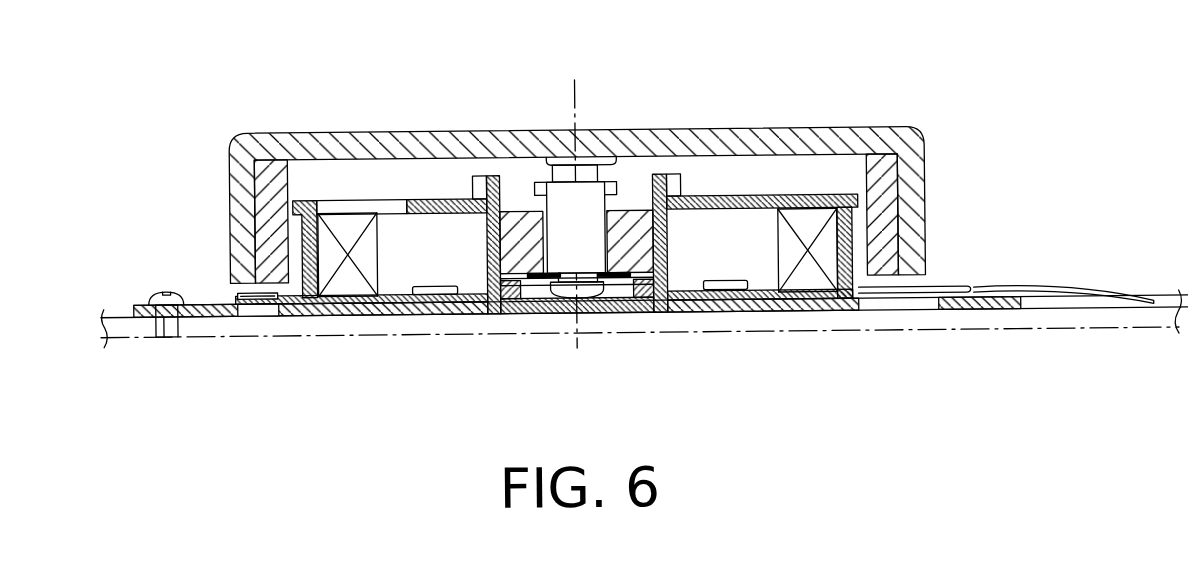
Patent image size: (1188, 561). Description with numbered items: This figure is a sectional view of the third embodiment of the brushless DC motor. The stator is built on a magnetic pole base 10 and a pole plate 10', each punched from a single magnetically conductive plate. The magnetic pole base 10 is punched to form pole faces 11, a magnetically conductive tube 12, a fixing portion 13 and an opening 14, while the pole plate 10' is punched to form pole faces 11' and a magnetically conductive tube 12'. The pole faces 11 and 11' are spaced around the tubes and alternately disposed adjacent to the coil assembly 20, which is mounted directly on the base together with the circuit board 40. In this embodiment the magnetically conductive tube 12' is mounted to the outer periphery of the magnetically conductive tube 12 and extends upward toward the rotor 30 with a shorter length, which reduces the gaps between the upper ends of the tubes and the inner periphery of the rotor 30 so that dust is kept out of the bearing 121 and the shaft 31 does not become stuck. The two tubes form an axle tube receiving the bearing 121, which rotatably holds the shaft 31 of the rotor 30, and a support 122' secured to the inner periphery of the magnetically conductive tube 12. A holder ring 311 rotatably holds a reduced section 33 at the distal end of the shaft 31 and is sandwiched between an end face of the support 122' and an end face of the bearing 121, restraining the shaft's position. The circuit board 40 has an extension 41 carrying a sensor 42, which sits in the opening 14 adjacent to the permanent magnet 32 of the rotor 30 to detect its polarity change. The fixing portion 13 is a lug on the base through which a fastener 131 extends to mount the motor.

The magnetic pole base 10 is at (644, 348).
The pole plate 10' is at (586, 131).
The pole faces 11 is at (904, 306).
The pole faces 11' is at (305, 174).
The magnetically conductive tube 12 is at (617, 345).
The magnetically conductive tube 12' is at (591, 177).
The fixing portion 13 is at (142, 318).
The fastener 131 is at (164, 318).
The opening 14 is at (267, 314).
The coil assembly 20 is at (345, 225).
The rotor 30 is at (242, 184).
The shaft 31 is at (570, 220).
The holder ring 311 is at (530, 313).
The permanent magnet 32 is at (258, 179).
The reduced section 33 is at (613, 314).
The circuit board 40 is at (420, 315).
The extension 41 is at (320, 302).
The sensor 42 is at (242, 314).
The bearing 121 is at (505, 213).
The support 122' is at (579, 348).